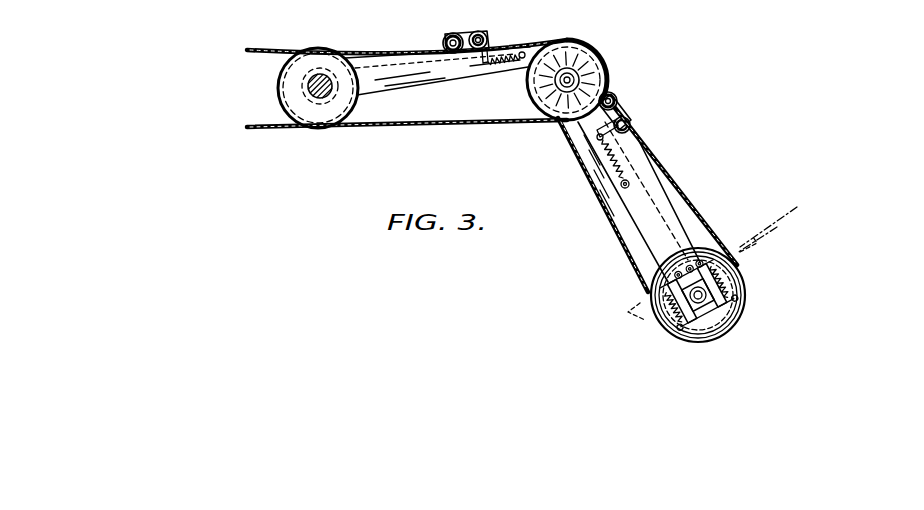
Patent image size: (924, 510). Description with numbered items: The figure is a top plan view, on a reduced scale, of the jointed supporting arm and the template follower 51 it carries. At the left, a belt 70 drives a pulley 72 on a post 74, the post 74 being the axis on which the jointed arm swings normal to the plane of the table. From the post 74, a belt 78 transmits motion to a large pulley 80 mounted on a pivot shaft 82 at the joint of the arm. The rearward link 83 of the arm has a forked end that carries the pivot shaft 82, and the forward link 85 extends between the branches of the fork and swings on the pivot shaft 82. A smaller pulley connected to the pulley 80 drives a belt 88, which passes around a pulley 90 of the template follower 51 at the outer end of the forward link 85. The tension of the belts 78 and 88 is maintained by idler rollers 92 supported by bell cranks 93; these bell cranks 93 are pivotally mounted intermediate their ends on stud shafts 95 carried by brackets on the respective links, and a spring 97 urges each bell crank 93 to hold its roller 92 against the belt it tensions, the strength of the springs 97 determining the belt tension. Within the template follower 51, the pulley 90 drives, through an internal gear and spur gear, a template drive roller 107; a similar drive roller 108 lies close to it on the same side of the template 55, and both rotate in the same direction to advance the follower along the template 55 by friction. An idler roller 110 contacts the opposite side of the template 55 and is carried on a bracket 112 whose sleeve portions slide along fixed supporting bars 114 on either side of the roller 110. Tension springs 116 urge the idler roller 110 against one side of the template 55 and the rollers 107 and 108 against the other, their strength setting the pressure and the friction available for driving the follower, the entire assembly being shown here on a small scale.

The template follower 51 is at (753, 287).
The template 55 is at (737, 255).
The belt 70 is at (253, 129).
The pulley 72 is at (318, 114).
The post 74 is at (308, 84).
The belt 78 is at (372, 50).
The large pulley 80 is at (598, 56).
The pivot shaft 82 is at (555, 96).
The rearward link 83 is at (430, 80).
The forward link 85 is at (643, 213).
The belt 88 is at (680, 197).
The pulley 90 is at (655, 272).
The idler rollers 92 is at (456, 30).
The bell cranks 93 is at (485, 29).
The stud shafts 95 is at (493, 36).
The spring 97 is at (497, 64).
The template drive roller 107 is at (702, 252).
The drive roller 108 is at (673, 255).
The idler roller 110 is at (664, 296).
The bracket 112 is at (736, 321).
The fixed supporting bar 114 is at (683, 333).
The tension spring 116 is at (673, 313).